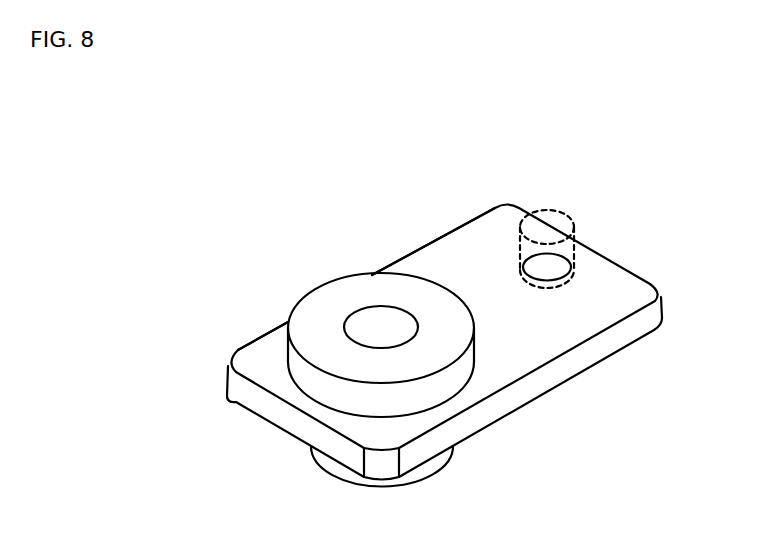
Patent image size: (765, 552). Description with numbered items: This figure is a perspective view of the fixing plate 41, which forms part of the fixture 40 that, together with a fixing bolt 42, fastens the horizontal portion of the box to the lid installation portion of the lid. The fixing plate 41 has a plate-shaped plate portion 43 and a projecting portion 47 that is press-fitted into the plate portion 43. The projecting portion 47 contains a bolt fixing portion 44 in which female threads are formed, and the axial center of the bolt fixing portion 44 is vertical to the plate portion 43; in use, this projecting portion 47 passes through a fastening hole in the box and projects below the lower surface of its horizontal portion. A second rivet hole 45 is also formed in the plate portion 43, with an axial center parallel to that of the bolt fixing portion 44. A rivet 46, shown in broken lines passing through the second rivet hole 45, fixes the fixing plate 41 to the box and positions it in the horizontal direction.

The fixture 40 is at (444, 338).
The fixing plate 41 is at (459, 222).
The fixing bolt 42 is at (381, 345).
The plate portion 43 is at (591, 351).
The bolt fixing portion 44 is at (437, 466).
The second rivet hole 45 is at (560, 261).
The rivet 46 is at (568, 210).
The projecting portion 47 is at (381, 462).